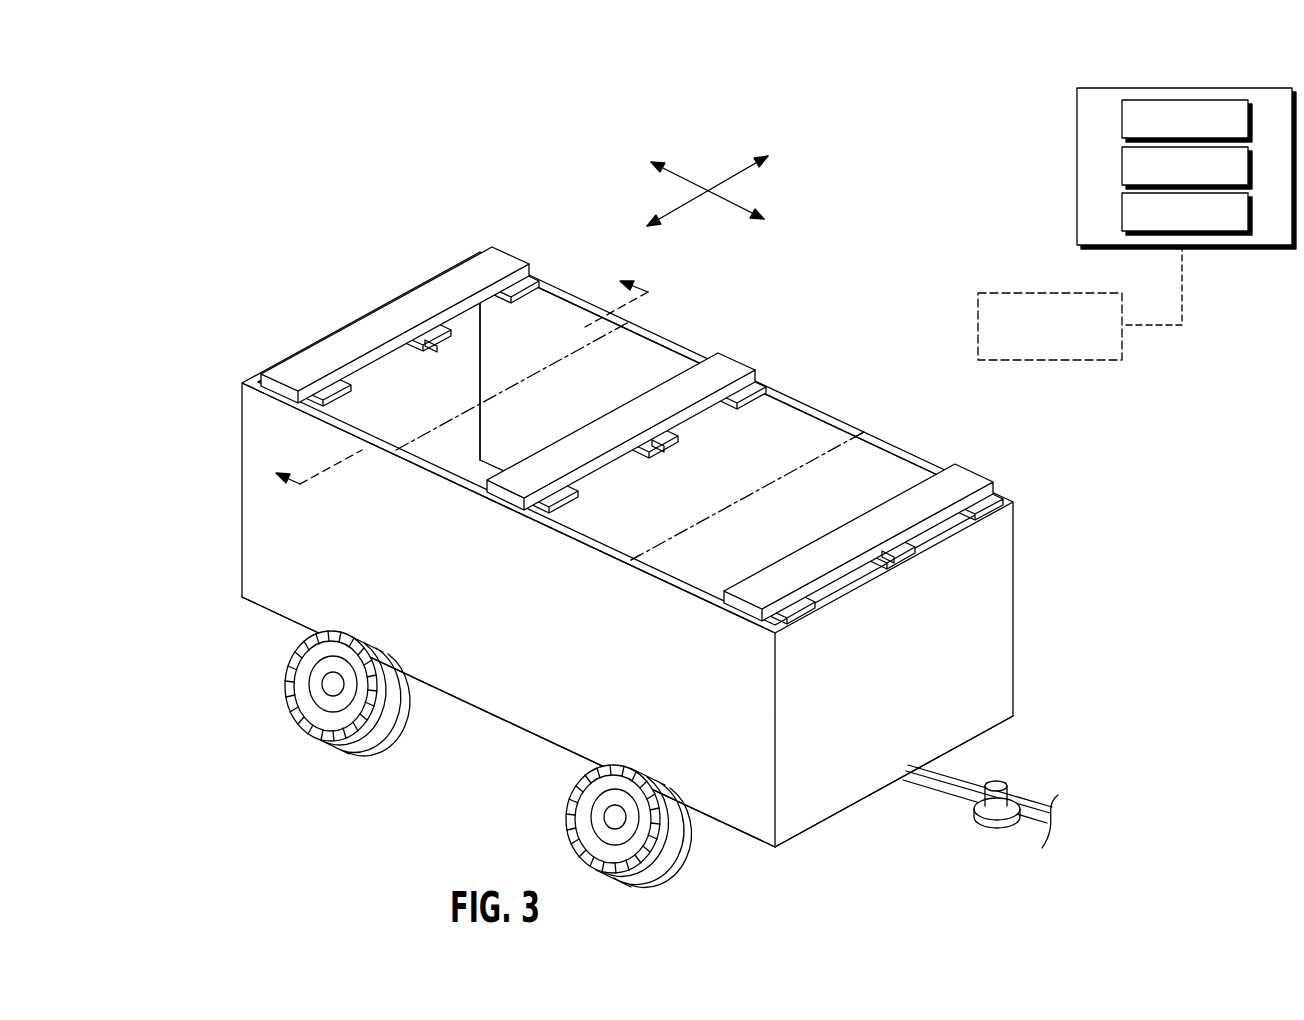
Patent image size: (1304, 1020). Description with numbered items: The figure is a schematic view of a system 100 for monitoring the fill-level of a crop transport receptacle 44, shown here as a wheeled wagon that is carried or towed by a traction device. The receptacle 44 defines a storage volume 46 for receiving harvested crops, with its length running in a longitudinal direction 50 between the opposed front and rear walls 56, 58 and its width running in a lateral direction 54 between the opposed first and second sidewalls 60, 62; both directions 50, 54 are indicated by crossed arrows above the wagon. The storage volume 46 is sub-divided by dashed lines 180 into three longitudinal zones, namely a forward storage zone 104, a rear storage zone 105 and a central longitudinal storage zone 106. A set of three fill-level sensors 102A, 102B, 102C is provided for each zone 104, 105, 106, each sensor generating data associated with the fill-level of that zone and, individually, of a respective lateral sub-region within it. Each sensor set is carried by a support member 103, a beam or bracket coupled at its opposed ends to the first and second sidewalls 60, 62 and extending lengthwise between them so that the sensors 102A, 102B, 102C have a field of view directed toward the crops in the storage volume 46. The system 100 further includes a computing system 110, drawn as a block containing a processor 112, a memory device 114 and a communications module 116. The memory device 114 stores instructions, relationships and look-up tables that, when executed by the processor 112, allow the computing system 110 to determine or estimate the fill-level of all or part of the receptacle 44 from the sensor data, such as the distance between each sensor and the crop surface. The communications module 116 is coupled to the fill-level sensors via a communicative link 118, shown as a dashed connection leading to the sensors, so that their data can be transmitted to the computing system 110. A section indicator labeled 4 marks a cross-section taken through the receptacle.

The system for monitoring the fill-level of a crop transport receptacle 100 is at (608, 505).
The crop transport receptacle 44 is at (218, 402).
The storage volume 46 is at (667, 362).
The longitudinal direction 50 is at (676, 176).
The lateral direction 54 is at (738, 172).
The front wall 56 is at (830, 785).
The rear wall 58 is at (338, 332).
The first sidewall 60 is at (495, 660).
The second sidewall 62 is at (870, 425).
The fill-level sensor 102A is at (327, 393).
The fill-level sensor 102B is at (670, 422).
The fill-level sensor 102C is at (432, 340).
The support member 103 is at (405, 325).
The forward storage zone 104 is at (808, 544).
The rear storage zone 105 is at (535, 350).
The central longitudinal storage zone 106 is at (660, 512).
The dashed lines 180 is at (512, 380).
The computing system 110 is at (1099, 124).
The processor 112 is at (1122, 120).
The memory device 114 is at (1122, 167).
The communications module 116 is at (1122, 214).
The communicative link 118 is at (1187, 304).
The section line 4- 4 is at (451, 371).